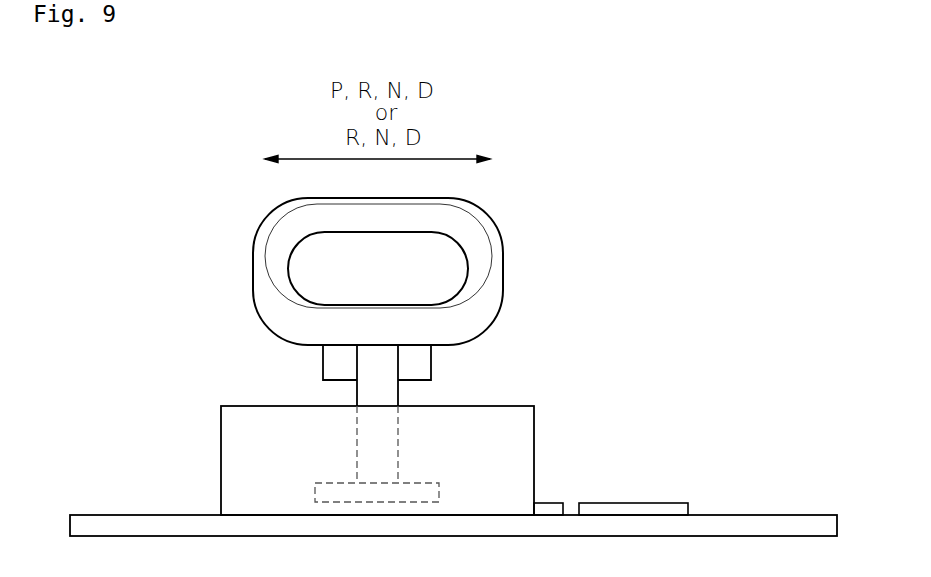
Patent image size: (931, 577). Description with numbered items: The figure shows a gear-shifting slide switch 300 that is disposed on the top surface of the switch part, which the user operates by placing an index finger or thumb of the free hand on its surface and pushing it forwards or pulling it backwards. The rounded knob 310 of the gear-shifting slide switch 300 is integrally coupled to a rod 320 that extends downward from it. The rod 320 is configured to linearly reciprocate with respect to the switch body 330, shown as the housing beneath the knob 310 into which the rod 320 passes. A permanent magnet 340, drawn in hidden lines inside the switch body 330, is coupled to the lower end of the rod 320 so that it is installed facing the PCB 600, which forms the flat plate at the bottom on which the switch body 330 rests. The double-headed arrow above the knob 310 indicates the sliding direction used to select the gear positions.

The gear-shifting slide switch 300 is at (250, 231).
The knob 310 is at (437, 258).
The rod 320 is at (388, 396).
The switch body 330 is at (517, 441).
The permanent magnet 340 is at (330, 492).
The PCB 600 is at (787, 523).